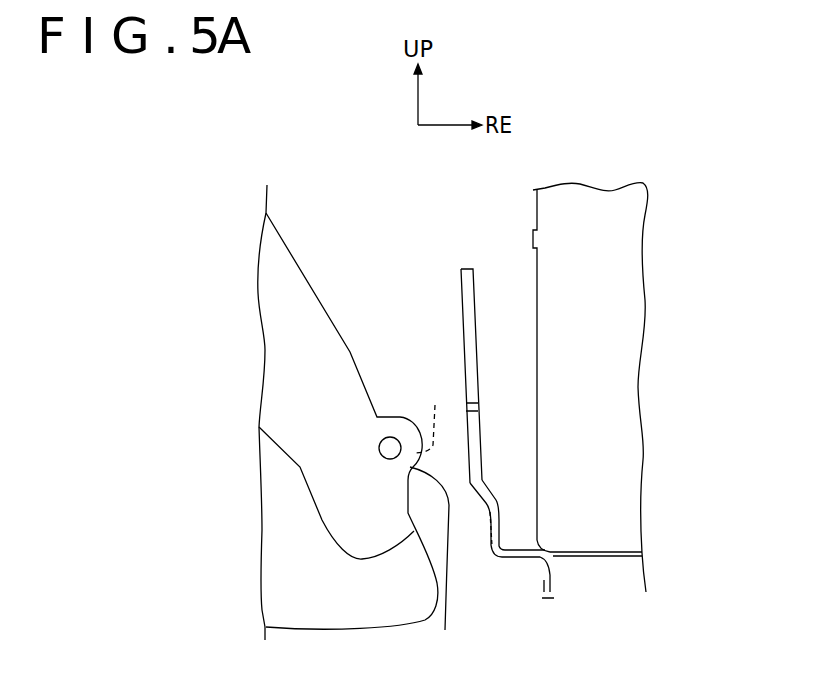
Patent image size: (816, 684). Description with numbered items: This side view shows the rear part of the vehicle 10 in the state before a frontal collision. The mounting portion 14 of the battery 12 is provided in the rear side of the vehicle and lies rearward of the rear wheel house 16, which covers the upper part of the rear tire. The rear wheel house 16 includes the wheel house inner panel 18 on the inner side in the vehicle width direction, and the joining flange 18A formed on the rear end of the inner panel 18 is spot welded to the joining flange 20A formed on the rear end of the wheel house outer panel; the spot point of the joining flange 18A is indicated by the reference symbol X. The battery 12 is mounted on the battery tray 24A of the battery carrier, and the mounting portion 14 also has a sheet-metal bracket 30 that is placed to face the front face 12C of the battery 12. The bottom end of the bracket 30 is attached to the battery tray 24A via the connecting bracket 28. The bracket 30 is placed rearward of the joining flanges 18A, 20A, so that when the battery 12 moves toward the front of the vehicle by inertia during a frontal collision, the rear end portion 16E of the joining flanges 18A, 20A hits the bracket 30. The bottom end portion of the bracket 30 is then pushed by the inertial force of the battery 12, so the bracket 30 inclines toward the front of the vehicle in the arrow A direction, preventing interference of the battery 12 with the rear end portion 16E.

The vehicle body 10 is at (571, 168).
The battery 12 is at (523, 258).
The front face of the battery 12C is at (537, 338).
The mounting portion 14 is at (628, 542).
The rear wheel house 16 is at (310, 262).
The rear end portion of the joining flanges 16E is at (438, 568).
The wheel house inner panel 18 is at (326, 353).
The joining flange 18A is at (413, 498).
The joining flange 20A is at (435, 413).
The battery tray 24A is at (578, 550).
The connecting bracket 28 is at (506, 572).
The bracket 30 is at (493, 427).
The arrow A direction A is at (385, 376).
The spot point X is at (387, 458).